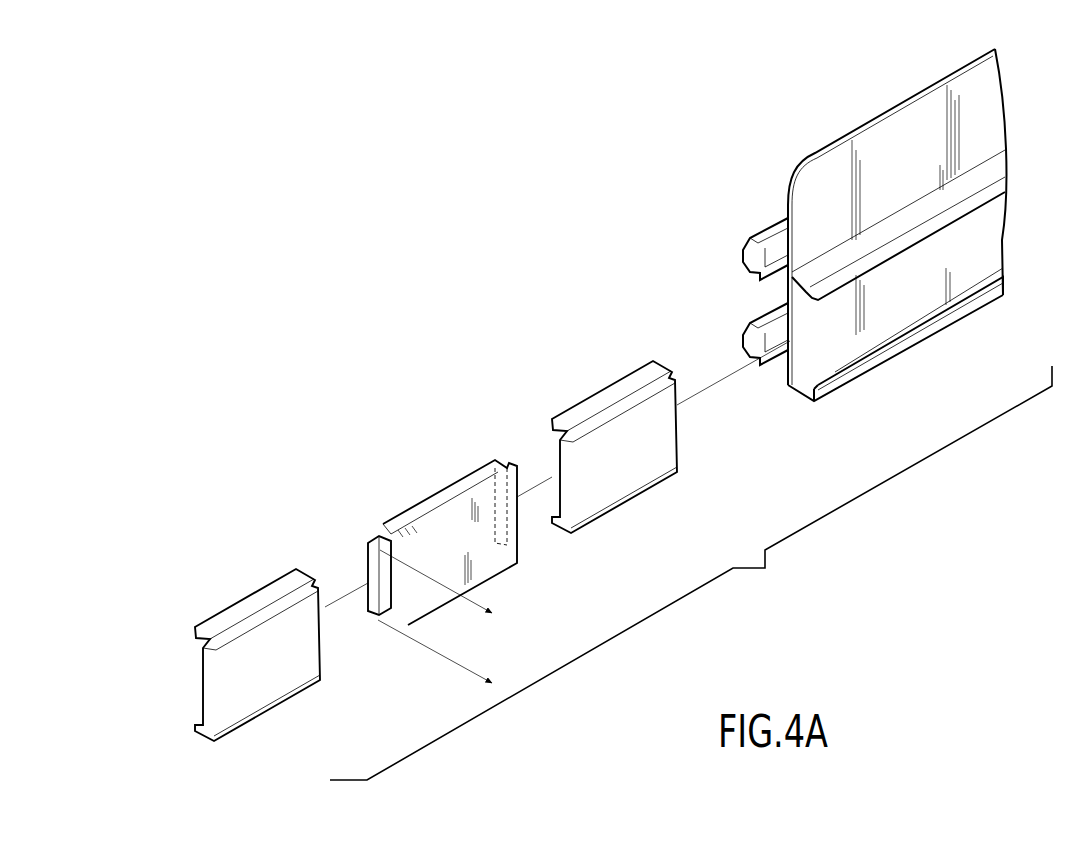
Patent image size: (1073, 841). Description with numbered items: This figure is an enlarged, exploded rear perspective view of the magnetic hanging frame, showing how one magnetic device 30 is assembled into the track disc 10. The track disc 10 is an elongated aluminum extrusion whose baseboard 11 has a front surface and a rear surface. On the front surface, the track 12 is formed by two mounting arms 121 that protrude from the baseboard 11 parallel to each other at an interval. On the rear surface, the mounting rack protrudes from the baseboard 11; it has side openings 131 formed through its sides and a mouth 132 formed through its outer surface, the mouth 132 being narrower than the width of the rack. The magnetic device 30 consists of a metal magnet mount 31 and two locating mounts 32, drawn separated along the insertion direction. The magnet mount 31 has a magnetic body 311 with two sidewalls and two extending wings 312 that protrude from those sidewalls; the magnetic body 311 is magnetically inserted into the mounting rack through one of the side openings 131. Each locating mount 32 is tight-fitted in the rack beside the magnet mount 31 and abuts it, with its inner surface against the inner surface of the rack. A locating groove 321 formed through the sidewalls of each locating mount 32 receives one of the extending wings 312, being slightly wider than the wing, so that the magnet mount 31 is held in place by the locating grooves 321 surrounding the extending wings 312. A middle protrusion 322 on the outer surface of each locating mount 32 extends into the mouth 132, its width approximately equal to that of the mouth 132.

The track disc 10 is at (826, 239).
The baseboard 11 is at (921, 133).
The track 12 is at (826, 257).
The mounting arms 121 is at (753, 255).
The side openings 131 is at (802, 385).
The mouth 132 is at (828, 376).
The magnetic device 30 is at (332, 378).
The magnet mount 31 is at (436, 547).
The magnetic body 311 is at (490, 560).
The extending wings 312 is at (516, 464).
The locating mounts 32 is at (414, 537).
The locating groove 321 is at (414, 551).
The middle protrusion 322 is at (633, 475).